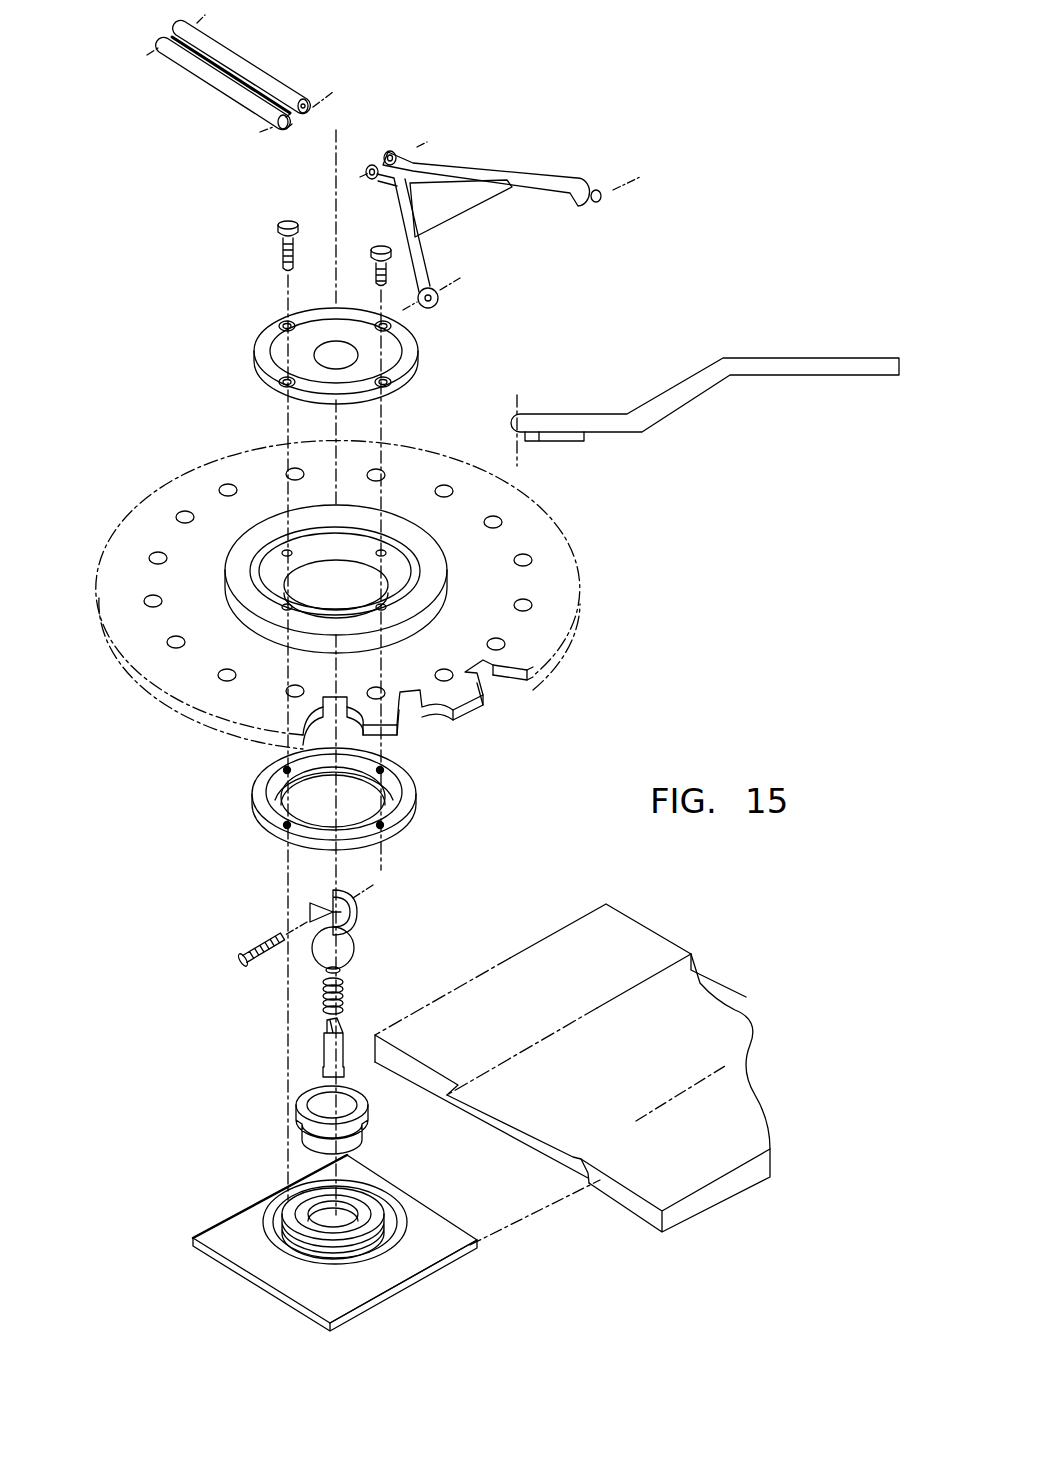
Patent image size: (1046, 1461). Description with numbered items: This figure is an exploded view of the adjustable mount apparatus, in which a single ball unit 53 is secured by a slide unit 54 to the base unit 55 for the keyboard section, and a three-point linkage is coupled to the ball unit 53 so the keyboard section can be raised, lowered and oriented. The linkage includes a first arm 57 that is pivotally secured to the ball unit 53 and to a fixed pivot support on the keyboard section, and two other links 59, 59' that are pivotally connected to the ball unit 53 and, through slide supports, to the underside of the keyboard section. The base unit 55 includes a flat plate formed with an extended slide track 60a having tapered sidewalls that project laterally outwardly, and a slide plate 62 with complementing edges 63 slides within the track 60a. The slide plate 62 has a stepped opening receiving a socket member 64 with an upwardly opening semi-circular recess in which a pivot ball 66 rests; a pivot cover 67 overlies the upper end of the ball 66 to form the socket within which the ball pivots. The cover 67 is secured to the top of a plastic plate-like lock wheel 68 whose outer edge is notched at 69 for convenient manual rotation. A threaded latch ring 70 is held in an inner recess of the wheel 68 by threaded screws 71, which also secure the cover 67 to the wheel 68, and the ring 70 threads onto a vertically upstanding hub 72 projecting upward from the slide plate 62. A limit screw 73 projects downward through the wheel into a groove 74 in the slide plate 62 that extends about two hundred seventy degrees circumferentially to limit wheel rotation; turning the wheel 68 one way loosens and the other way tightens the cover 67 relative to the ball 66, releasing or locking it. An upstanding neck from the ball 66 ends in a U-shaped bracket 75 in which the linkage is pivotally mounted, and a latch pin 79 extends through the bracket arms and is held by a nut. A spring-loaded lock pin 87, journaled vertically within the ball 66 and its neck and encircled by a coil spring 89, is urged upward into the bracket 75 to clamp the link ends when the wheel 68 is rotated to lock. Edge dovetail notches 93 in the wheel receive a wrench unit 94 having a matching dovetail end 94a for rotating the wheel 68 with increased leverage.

The ball unit 53 is at (360, 938).
The slide unit 54 is at (471, 1253).
The base unit 55 is at (591, 938).
The first arm 57 is at (172, 68).
The link 59 is at (446, 242).
The link 59' is at (500, 160).
The slide track 60a is at (541, 1113).
The slide plate 62 is at (204, 1255).
The complementing edges 63 is at (416, 1268).
The socket member 64 is at (299, 1120).
The pivot ball 66 is at (319, 966).
The pivot cover 67 is at (423, 353).
The lock wheel 68 is at (186, 480).
The notches 69 is at (476, 712).
The threaded latch ring 70 is at (258, 778).
The threaded screws 71 is at (373, 249).
The hub 72 is at (294, 1247).
The limit screw 73 is at (279, 228).
The groove 74 is at (338, 1273).
The U-shaped bracket 75 is at (313, 908).
The latch pin 79 is at (240, 950).
The lock pin 87 is at (322, 1050).
The coil spring 89 is at (321, 1006).
The dovetail notches 93 is at (476, 658).
The wrench unit 94 is at (766, 355).
The dovetail end 94a is at (663, 421).